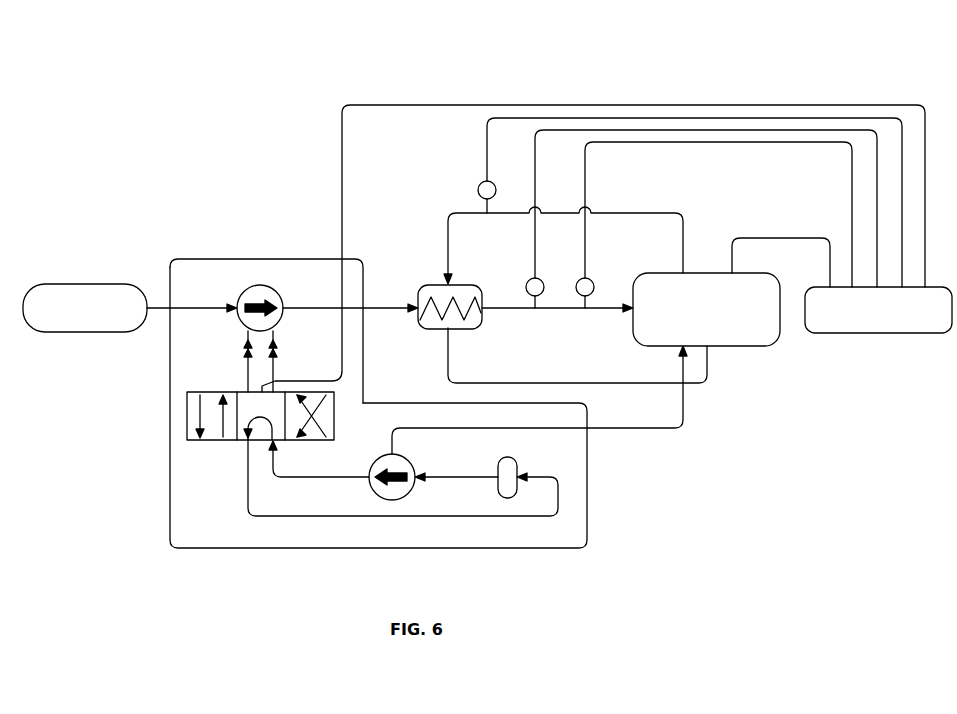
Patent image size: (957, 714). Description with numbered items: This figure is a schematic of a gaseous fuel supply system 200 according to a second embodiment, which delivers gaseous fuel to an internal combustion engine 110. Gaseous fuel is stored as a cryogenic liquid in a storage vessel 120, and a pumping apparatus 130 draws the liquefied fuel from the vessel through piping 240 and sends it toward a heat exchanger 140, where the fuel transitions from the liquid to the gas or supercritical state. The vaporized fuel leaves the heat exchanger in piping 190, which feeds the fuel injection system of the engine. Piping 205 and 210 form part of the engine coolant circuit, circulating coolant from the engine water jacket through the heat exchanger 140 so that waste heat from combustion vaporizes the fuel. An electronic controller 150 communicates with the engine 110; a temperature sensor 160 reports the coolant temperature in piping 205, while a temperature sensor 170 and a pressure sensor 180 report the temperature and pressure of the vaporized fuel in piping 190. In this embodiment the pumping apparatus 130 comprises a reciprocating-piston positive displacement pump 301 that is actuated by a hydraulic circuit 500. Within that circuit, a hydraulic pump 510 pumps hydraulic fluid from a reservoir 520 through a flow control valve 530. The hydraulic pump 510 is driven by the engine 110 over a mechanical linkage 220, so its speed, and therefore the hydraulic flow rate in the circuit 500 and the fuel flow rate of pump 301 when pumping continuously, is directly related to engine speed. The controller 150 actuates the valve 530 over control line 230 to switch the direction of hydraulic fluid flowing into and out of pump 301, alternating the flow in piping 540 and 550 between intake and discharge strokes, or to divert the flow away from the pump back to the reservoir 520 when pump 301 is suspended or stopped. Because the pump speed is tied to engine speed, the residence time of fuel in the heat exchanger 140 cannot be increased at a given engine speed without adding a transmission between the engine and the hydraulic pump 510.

The internal combustion engine 110 is at (735, 347).
The storage vessel 120 is at (82, 283).
The pumping apparatus 130 is at (270, 258).
The heat exchanger 140 is at (418, 286).
The electronic controller 150 is at (880, 334).
The temperature sensor 160 is at (480, 183).
The temperature sensor 170 is at (527, 281).
The pressure sensor 180 is at (593, 283).
The piping 190 is at (555, 312).
The gaseous fuel supply system 200 is at (488, 91).
The piping 205 is at (656, 212).
The piping 210 is at (541, 383).
The mechanical linkage 220 is at (620, 430).
The control line 230 is at (383, 103).
The piping 240 is at (163, 312).
The reciprocating-piston positive displacement pump 301 is at (240, 292).
The hydraulic circuit 500 is at (215, 498).
The hydraulic pump 510 is at (378, 460).
The reservoir 520 is at (496, 470).
The flow control valve 530 is at (210, 441).
The piping 540 is at (247, 377).
The piping 550 is at (274, 372).